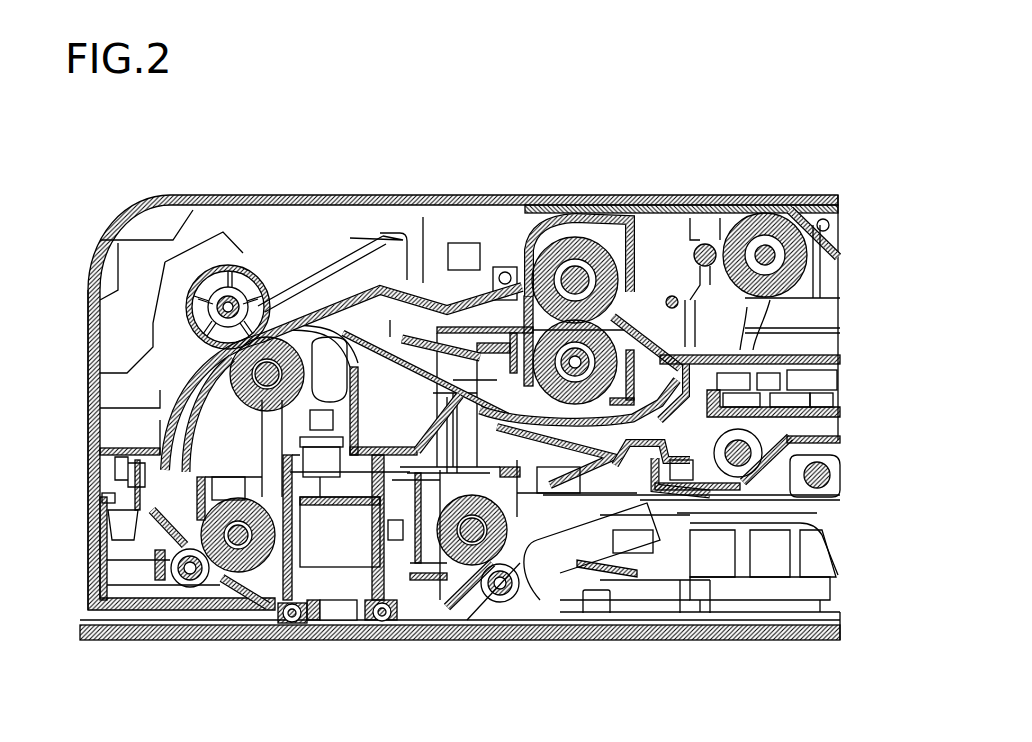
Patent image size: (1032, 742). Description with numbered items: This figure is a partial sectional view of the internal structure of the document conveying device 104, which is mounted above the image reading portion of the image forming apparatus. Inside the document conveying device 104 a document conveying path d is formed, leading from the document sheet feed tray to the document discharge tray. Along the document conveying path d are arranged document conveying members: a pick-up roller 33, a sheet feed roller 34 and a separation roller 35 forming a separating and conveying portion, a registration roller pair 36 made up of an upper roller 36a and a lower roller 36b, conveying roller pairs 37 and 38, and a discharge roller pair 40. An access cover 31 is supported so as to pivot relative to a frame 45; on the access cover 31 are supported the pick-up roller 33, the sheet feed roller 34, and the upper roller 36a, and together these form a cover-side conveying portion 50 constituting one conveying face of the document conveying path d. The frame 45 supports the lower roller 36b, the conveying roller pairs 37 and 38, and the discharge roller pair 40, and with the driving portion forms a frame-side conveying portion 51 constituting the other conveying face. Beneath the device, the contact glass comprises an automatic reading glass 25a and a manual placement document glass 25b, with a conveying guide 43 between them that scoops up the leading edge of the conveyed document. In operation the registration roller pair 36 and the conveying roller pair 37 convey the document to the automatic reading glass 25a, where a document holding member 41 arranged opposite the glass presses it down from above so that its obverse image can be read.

The cover-side conveying portion 50 is at (148, 190).
The document conveying device 104 is at (775, 160).
The access cover 31 is at (100, 248).
The registration roller pair 36 is at (352, 137).
The upper roller of the registration roller pair 36a is at (243, 275).
The lower roller of the registration roller pair 36b is at (300, 338).
The separation roller 35 is at (510, 327).
The sheet feed roller 34 is at (607, 258).
The pick-up roller 33 is at (805, 268).
The frame 45 is at (838, 414).
The discharge roller pair 40 is at (834, 480).
The frame-side conveying portion 51 is at (856, 597).
The conveying roller pair 37 is at (190, 560).
The document conveying path d is at (173, 403).
The document holding member 41 is at (338, 590).
The automatic reading glass 25a is at (318, 640).
The manual placement document glass 25b is at (740, 640).
The conveying guide 43 is at (390, 640).
The conveying roller pair 38 is at (540, 560).